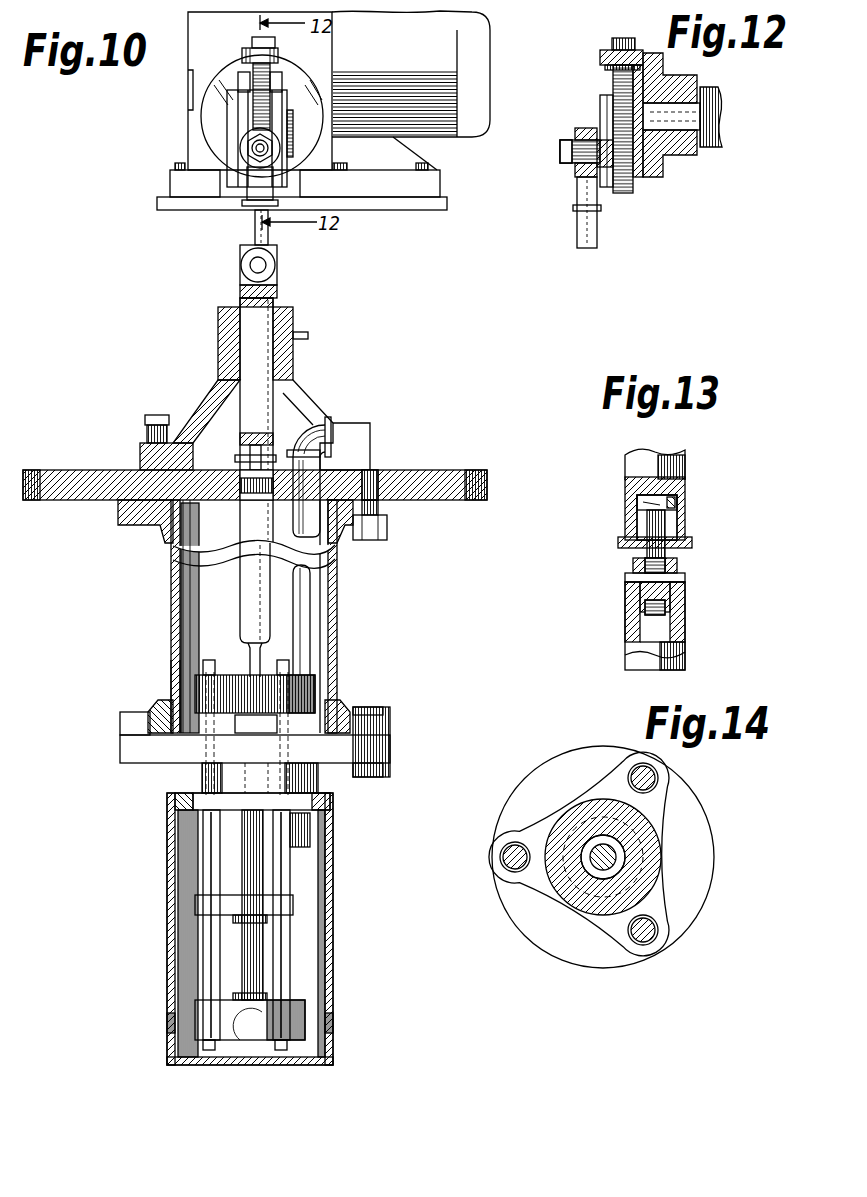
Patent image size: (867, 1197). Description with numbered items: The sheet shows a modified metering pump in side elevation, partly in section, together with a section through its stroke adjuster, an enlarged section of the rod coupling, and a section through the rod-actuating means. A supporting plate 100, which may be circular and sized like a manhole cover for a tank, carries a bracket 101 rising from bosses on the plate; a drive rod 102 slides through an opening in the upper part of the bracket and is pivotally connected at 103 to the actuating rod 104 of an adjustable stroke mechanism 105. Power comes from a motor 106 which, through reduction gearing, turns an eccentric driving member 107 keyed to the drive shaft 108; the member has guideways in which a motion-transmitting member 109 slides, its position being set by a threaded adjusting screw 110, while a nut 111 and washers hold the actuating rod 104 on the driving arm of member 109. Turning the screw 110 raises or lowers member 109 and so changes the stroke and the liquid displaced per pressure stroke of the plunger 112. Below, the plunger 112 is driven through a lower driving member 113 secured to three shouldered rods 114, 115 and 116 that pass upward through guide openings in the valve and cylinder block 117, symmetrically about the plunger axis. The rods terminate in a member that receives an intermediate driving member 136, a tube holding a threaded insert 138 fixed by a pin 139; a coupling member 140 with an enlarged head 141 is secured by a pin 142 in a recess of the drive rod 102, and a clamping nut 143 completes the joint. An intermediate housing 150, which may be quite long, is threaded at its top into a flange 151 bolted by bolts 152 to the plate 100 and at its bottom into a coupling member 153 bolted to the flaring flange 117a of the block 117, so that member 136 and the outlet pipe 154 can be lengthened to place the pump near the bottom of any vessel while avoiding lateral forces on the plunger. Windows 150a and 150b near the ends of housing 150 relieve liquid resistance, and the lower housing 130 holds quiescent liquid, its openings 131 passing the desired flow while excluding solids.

In FIG. 10, the supporting plate 100 is at (416, 476).
In FIG. 10, the bracket 101 is at (212, 368).
In FIG. 10, the drive rod 102 is at (267, 312).
In FIG. 13, the drive rod 102 is at (688, 458).
In FIG. 10, the pivotal connection 103 is at (266, 265).
In FIG. 10, the actuating rod 104 is at (254, 232).
In FIG. 12, the actuating rod 104 is at (592, 222).
In FIG. 10, the adjustable stroke mechanism 105 is at (160, 132).
In FIG. 12, the adjustable stroke mechanism 105 is at (572, 121).
In FIG. 10, the motor 106 is at (443, 58).
In FIG. 10, the eccentric driving member 107 is at (212, 140).
In FIG. 12, the eccentric driving member 107 is at (676, 158).
In FIG. 12, the drive shaft 108 is at (722, 118).
In FIG. 12, the motion-transmitting member 109 is at (635, 182).
In FIG. 10, the threaded adjusting screw 110 is at (252, 42).
In FIG. 12, the threaded adjusting screw 110 is at (612, 43).
In FIG. 12, the nut 111 is at (562, 163).
In FIG. 10, the plunger 112 is at (255, 975).
In FIG. 14, the plunger 112 is at (580, 880).
In FIG. 10, the lower driving member 113 is at (303, 1010).
In FIG. 14, the lower driving member 113 is at (698, 905).
In FIG. 10, the rod 114 is at (286, 940).
In FIG. 14, the rod 114 is at (647, 942).
In FIG. 10, the rod 115 is at (208, 935).
In FIG. 14, the rod 115 is at (508, 850).
In FIG. 14, the rod 116 is at (656, 780).
In FIG. 10, the valve and cylinder block 117 is at (265, 880).
In FIG. 14, the valve and cylinder block 117 is at (655, 845).
In FIG. 10, the outwardly flaring flange 117a is at (378, 748).
In FIG. 10, the lower housing 130 is at (173, 855).
In FIG. 10, the openings 131 is at (170, 1027).
In FIG. 10, the intermediate driving member 136 is at (262, 590).
In FIG. 13, the intermediate driving member 136 is at (686, 613).
In FIG. 13, the threaded insert 138 is at (677, 566).
In FIG. 13, the pin 139 is at (640, 577).
In FIG. 10, the coupling member 140 is at (248, 460).
In FIG. 13, the coupling member 140 is at (652, 532).
In FIG. 10, the enlarged head 141 is at (245, 436).
In FIG. 13, the enlarged head 141 is at (677, 500).
In FIG. 13, the pin 142 is at (647, 499).
In FIG. 13, the clamping nut 143 is at (686, 530).
In FIG. 10, the intermediate housing 150 is at (172, 583).
In FIG. 10, the window 150a is at (176, 672).
In FIG. 10, the window 150b is at (172, 554).
In FIG. 10, the flange 151 is at (122, 516).
In FIG. 10, the bolts 152 is at (368, 535).
In FIG. 10, the coupling member 153 is at (336, 702).
In FIG. 10, the outlet pipe 154 is at (306, 620).